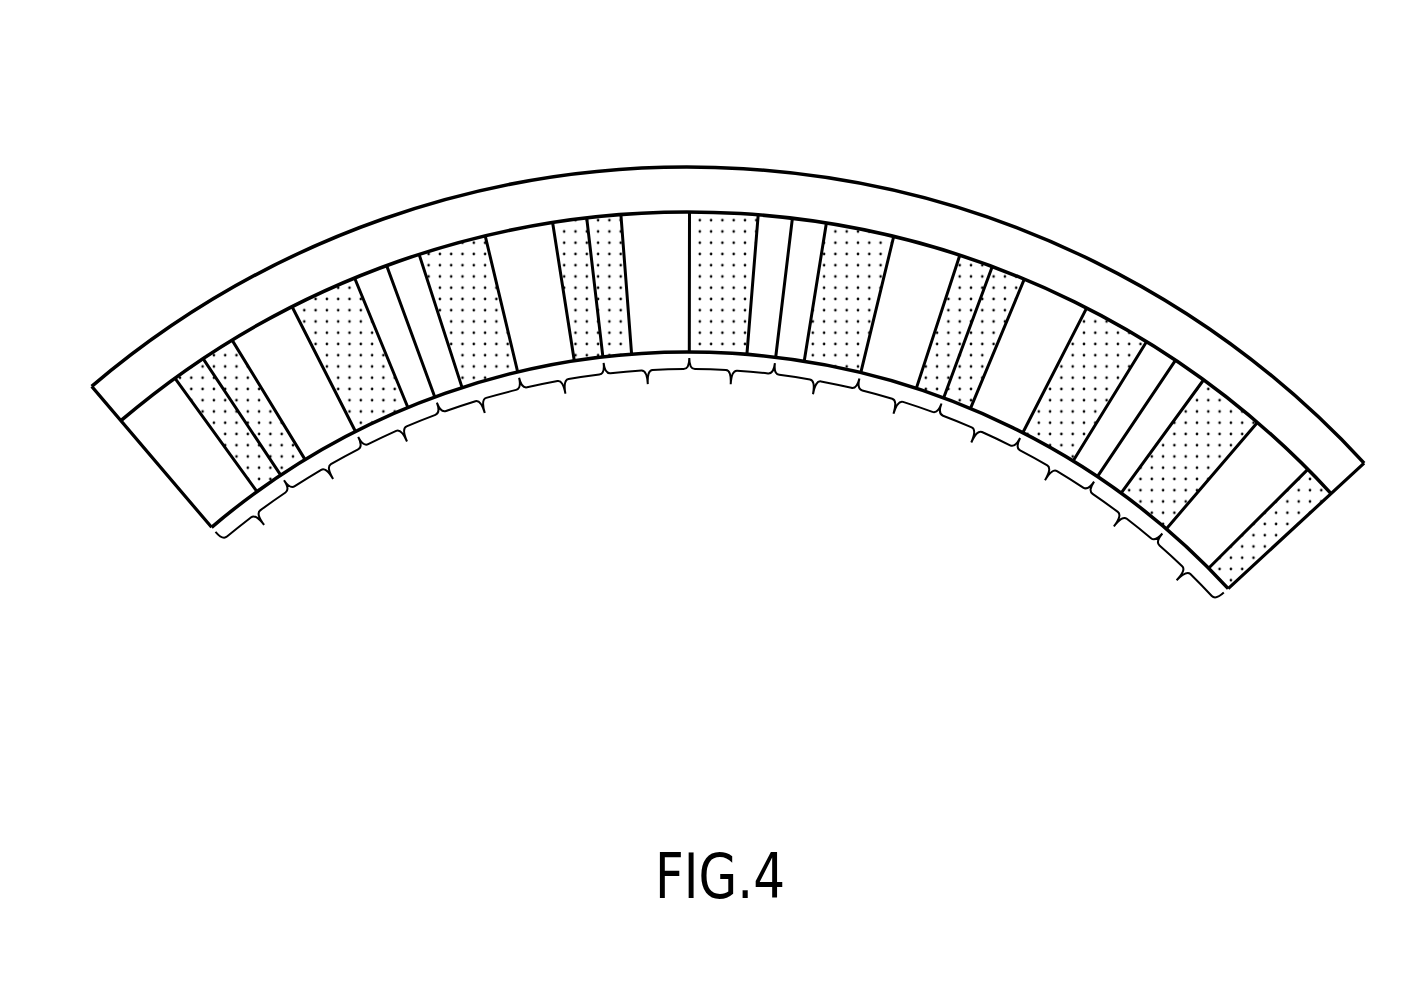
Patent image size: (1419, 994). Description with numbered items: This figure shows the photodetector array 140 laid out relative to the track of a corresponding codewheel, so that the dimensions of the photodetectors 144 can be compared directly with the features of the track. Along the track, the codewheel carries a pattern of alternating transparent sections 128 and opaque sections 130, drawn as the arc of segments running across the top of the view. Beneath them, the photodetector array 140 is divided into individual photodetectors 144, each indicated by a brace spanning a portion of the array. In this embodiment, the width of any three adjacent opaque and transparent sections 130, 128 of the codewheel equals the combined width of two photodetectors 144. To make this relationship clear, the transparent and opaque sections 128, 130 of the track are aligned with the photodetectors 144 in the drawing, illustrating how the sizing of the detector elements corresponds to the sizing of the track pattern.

The transparent sections 128 is at (1273, 427).
The opaque sections 130 is at (1317, 469).
The photodetector array 140 is at (742, 351).
The photodetectors 144 is at (720, 487).